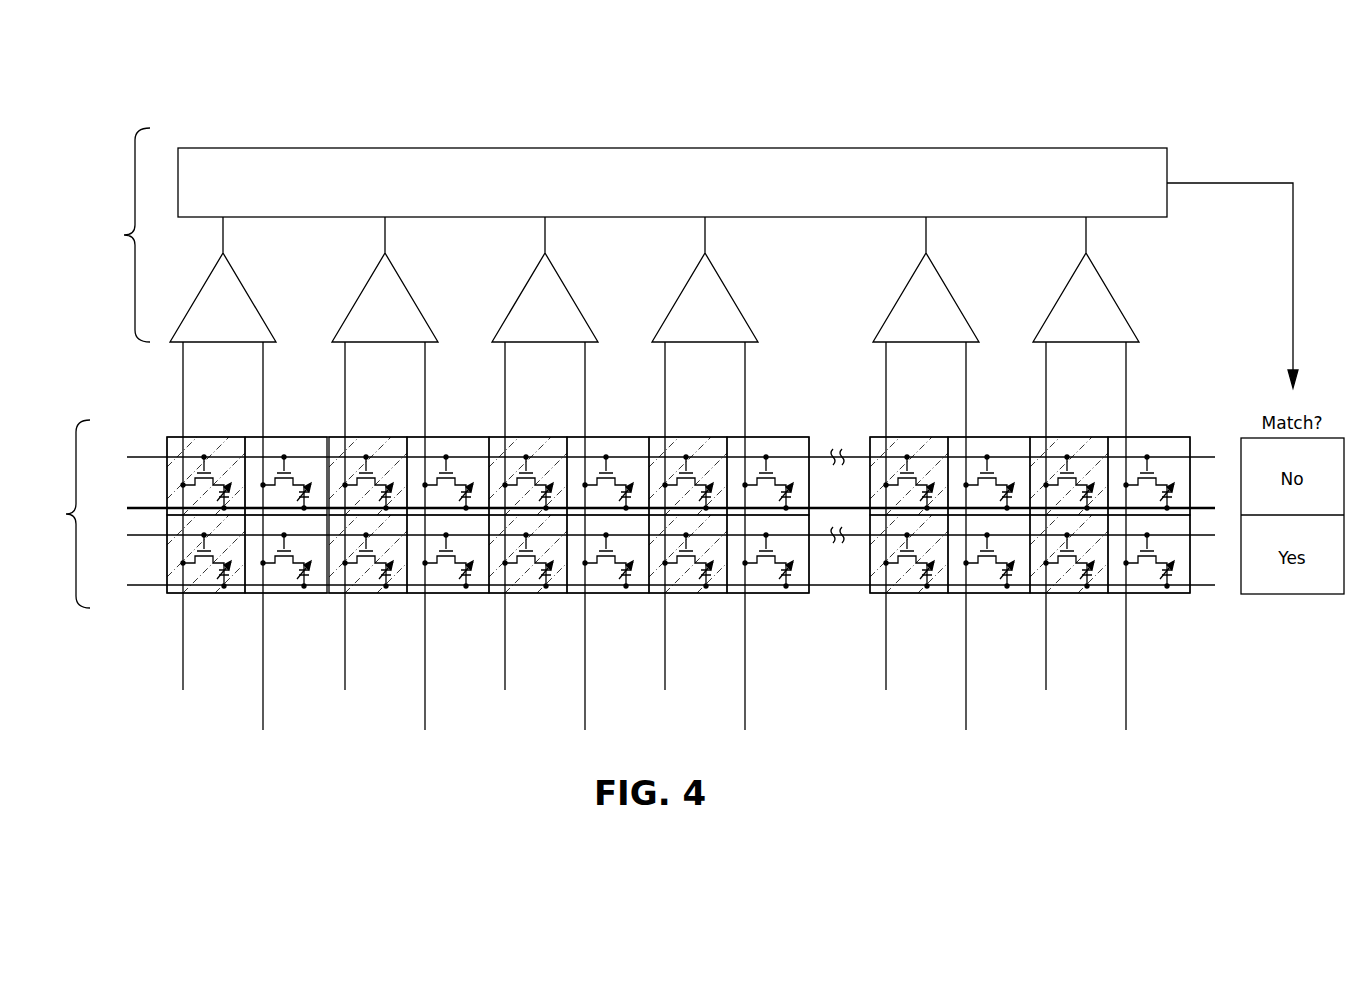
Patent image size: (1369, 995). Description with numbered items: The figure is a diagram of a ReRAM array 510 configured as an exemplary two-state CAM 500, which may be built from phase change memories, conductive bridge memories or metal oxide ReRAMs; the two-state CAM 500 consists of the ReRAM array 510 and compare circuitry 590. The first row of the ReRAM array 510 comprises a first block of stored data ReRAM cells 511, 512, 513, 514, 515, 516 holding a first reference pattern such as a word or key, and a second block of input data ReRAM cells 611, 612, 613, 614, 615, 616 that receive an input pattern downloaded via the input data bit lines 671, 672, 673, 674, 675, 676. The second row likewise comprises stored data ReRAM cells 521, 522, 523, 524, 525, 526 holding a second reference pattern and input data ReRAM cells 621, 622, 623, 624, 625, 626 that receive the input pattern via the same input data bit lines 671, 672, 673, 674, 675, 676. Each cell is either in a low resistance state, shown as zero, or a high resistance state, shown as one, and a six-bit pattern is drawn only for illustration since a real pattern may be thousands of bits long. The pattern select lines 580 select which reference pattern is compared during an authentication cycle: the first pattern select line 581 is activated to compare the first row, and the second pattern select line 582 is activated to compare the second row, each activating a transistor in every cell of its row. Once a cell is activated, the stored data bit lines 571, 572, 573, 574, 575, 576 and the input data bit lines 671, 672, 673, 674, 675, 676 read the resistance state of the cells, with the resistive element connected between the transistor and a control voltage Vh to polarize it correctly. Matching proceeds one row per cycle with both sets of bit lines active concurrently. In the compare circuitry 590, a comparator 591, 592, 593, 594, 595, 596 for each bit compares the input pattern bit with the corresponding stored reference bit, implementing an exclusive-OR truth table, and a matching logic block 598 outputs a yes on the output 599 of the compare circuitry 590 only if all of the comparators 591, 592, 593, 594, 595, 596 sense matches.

The two-state CAM 500 is at (1279, 140).
The matching logic block 598 is at (672, 148).
The output 599 is at (1294, 262).
The compare circuitry 590 is at (114, 235).
The comparator 591 is at (249, 296).
The comparator 592 is at (411, 296).
The comparator 593 is at (571, 296).
The comparator 594 is at (731, 296).
The comparator 595 is at (952, 296).
The comparator 596 is at (1112, 296).
The pattern select lines 580 is at (618, 514).
The first pattern select line 581 is at (148, 457).
The second pattern select line 582 is at (148, 535).
The ReRAM array 510 is at (167, 437).
The stored data ReRAM cell 511 is at (215, 437).
The stored data ReRAM cell 512 is at (377, 437).
The stored data ReRAM cell 513 is at (537, 437).
The stored data ReRAM cell 514 is at (697, 437).
The stored data ReRAM cell 515 is at (918, 437).
The stored data ReRAM cell 516 is at (1078, 437).
The input data ReRAM cell 611 is at (293, 437).
The input data ReRAM cell 612 is at (455, 437).
The input data ReRAM cell 613 is at (615, 437).
The input data ReRAM cell 614 is at (775, 437).
The input data ReRAM cell 615 is at (996, 437).
The input data ReRAM cell 616 is at (1156, 437).
The stored data ReRAM cell 521 is at (205, 593).
The stored data ReRAM cell 522 is at (367, 593).
The stored data ReRAM cell 523 is at (527, 593).
The stored data ReRAM cell 524 is at (687, 593).
The stored data ReRAM cell 525 is at (908, 593).
The stored data ReRAM cell 526 is at (1068, 593).
The input data ReRAM cell 621 is at (285, 593).
The input data ReRAM cell 622 is at (447, 593).
The input data ReRAM cell 623 is at (607, 593).
The input data ReRAM cell 624 is at (767, 593).
The input data ReRAM cell 625 is at (988, 593).
The input data ReRAM cell 626 is at (1148, 593).
The stored data bit line 571 is at (183, 673).
The stored data bit line 572 is at (345, 673).
The stored data bit line 573 is at (505, 673).
The stored data bit line 574 is at (665, 673).
The stored data bit line 575 is at (886, 670).
The stored data bit line 576 is at (1046, 670).
The input data bit line 671 is at (263, 703).
The input data bit line 672 is at (425, 703).
The input data bit line 673 is at (585, 703).
The input data bit line 674 is at (745, 703).
The input data bit line 675 is at (966, 703).
The input data bit line 676 is at (1126, 703).